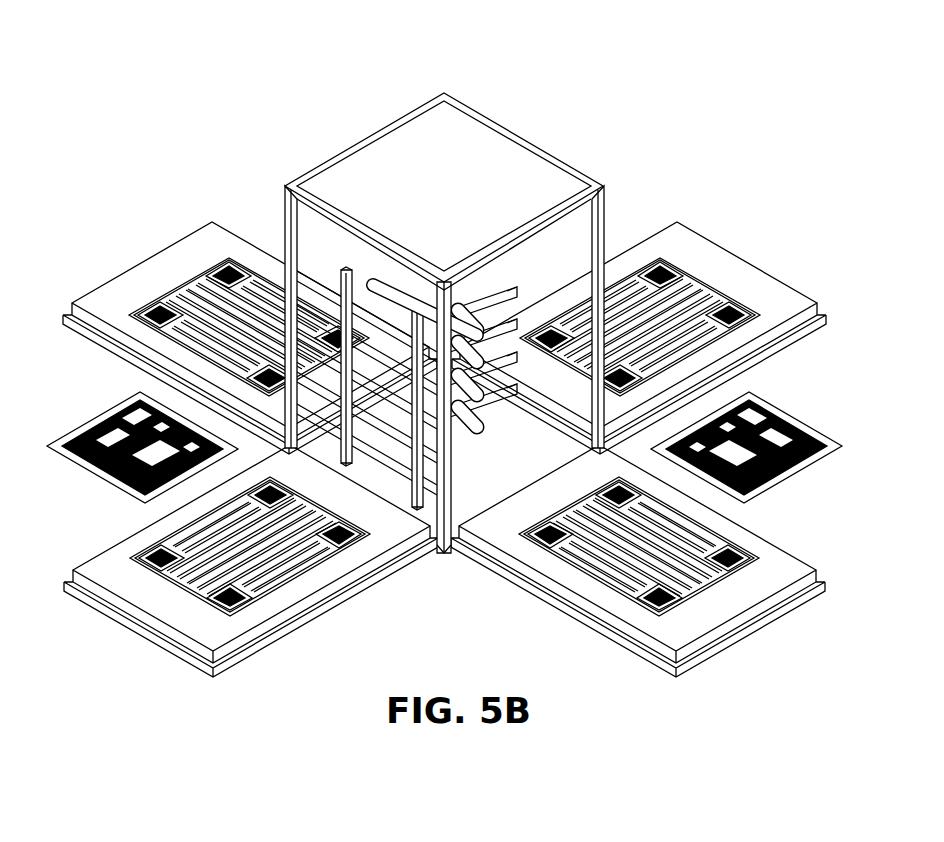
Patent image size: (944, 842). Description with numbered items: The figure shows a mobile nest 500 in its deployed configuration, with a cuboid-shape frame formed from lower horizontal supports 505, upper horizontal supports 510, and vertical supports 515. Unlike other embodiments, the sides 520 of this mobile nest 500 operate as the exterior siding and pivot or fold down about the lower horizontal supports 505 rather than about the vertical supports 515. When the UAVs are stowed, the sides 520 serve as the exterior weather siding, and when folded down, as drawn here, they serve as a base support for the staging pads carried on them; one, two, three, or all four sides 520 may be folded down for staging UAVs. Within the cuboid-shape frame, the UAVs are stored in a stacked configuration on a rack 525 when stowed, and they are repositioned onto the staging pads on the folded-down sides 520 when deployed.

The mobile nest 500 is at (444, 371).
The lower horizontal supports 505 is at (446, 553).
The upper horizontal supports 510 is at (480, 118).
The vertical supports 515 is at (285, 218).
The sides 520 is at (295, 628).
The rack 525 is at (372, 262).